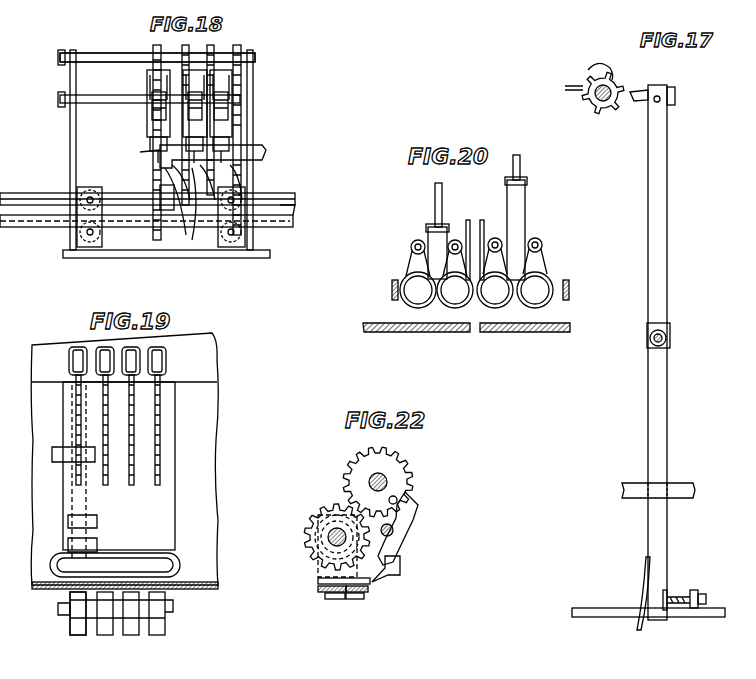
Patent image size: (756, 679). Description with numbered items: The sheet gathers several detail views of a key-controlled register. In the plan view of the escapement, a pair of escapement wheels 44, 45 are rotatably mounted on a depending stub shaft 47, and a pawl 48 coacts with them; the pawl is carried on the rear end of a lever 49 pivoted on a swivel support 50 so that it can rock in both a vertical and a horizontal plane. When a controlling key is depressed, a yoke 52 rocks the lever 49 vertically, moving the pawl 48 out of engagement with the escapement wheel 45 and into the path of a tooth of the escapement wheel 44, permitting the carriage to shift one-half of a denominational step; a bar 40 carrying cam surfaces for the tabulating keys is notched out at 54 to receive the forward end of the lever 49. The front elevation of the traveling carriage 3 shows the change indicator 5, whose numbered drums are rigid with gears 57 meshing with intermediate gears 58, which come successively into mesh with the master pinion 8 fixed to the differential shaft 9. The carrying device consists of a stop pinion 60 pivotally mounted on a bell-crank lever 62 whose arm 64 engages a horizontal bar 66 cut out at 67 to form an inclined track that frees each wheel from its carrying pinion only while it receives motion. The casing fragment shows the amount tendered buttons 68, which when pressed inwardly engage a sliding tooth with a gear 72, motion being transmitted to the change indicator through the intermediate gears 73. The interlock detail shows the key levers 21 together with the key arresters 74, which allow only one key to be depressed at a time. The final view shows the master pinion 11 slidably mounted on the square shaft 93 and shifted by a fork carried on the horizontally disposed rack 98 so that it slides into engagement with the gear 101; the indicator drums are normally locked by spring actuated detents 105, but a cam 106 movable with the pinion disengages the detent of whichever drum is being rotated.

In FIG. 18, the traveling carriage 3 is at (62, 106).
In FIG. 18, the change indicator 5 is at (160, 58).
In FIG. 19, the change indicator 5 is at (80, 636).
In FIG. 18, the master pinion 8 is at (154, 186).
In FIG. 18, the differential shaft 9 is at (6, 196).
In FIG. 22, the master pinion 11 is at (330, 506).
In FIG. 20, the key levers 21 is at (443, 192).
In FIG. 17, the bar 40 is at (590, 617).
In FIG. 17, the escapement wheel 44 is at (566, 88).
In FIG. 17, the escapement wheel 45 is at (600, 67).
In FIG. 17, the stub shaft 47 is at (593, 99).
In FIG. 17, the pawl 48 is at (637, 91).
In FIG. 17, the lever 49 is at (668, 280).
In FIG. 17, the swivel support 50 is at (668, 326).
In FIG. 17, the yoke 52 is at (680, 486).
In FIG. 17, the notch 54 is at (646, 628).
In FIG. 19, the gears 57 is at (112, 636).
In FIG. 18, the intermediate gears 58 is at (190, 228).
In FIG. 18, the stop pinion 60 is at (232, 88).
In FIG. 18, the bell-crank lever 62 is at (226, 118).
In FIG. 18, the arm 64 is at (222, 143).
In FIG. 18, the horizontal bar 66 is at (256, 153).
In FIG. 18, the cut-out 67 is at (160, 155).
In FIG. 19, the buttons 68 is at (160, 356).
In FIG. 19, the gear 72 is at (85, 482).
In FIG. 19, the intermediate gears 73 is at (110, 560).
In FIG. 20, the key arresters 74 is at (540, 287).
In FIG. 22, the square shaft 93 is at (334, 536).
In FIG. 22, the rack 98 is at (372, 582).
In FIG. 22, the gear 101 is at (396, 468).
In FIG. 22, the detents 105 is at (410, 526).
In FIG. 22, the cam 106 is at (400, 569).